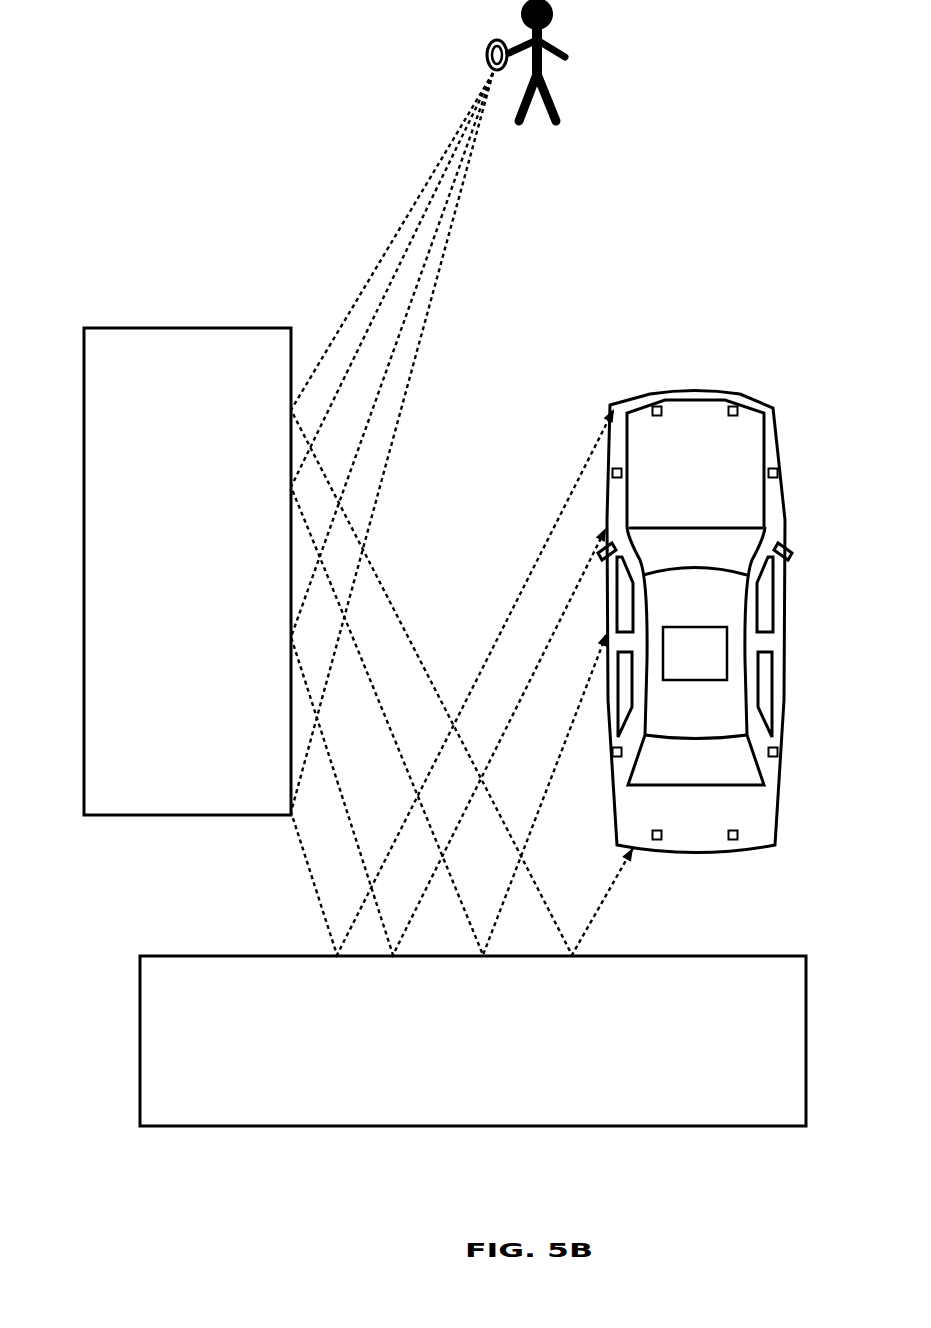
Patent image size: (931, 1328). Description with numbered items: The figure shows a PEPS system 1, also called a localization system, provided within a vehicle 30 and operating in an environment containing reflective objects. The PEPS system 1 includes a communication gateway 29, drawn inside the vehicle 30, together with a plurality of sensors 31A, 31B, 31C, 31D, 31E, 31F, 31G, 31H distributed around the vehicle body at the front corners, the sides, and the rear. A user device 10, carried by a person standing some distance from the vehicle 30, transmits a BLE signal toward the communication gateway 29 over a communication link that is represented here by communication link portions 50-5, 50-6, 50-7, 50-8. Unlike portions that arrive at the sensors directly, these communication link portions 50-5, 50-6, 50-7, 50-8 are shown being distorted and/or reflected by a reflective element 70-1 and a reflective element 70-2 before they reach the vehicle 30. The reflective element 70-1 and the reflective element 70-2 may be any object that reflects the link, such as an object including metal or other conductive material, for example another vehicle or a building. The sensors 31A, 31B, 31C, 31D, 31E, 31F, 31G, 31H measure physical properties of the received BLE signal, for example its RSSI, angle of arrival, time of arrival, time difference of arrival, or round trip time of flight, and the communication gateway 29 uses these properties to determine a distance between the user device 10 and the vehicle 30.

The PEPS system 1 is at (155, 52).
The user device 10 is at (494, 40).
The communication gateway 29 is at (697, 680).
The vehicle 30 is at (780, 437).
The sensor 31A is at (657, 406).
The sensor 31B is at (622, 473).
The sensor 31C is at (613, 757).
The sensor 31D is at (657, 831).
The sensor 31E is at (733, 840).
The sensor 31F is at (768, 752).
The sensor 31G is at (778, 473).
The sensor 31H is at (733, 406).
The communication link portion 50-5 is at (445, 252).
The communication link portion 50-6 is at (407, 315).
The communication link portion 50-7 is at (383, 290).
The communication link portion 50-8 is at (338, 330).
The reflective element 70-1 is at (83, 528).
The reflective element 70-2 is at (177, 955).